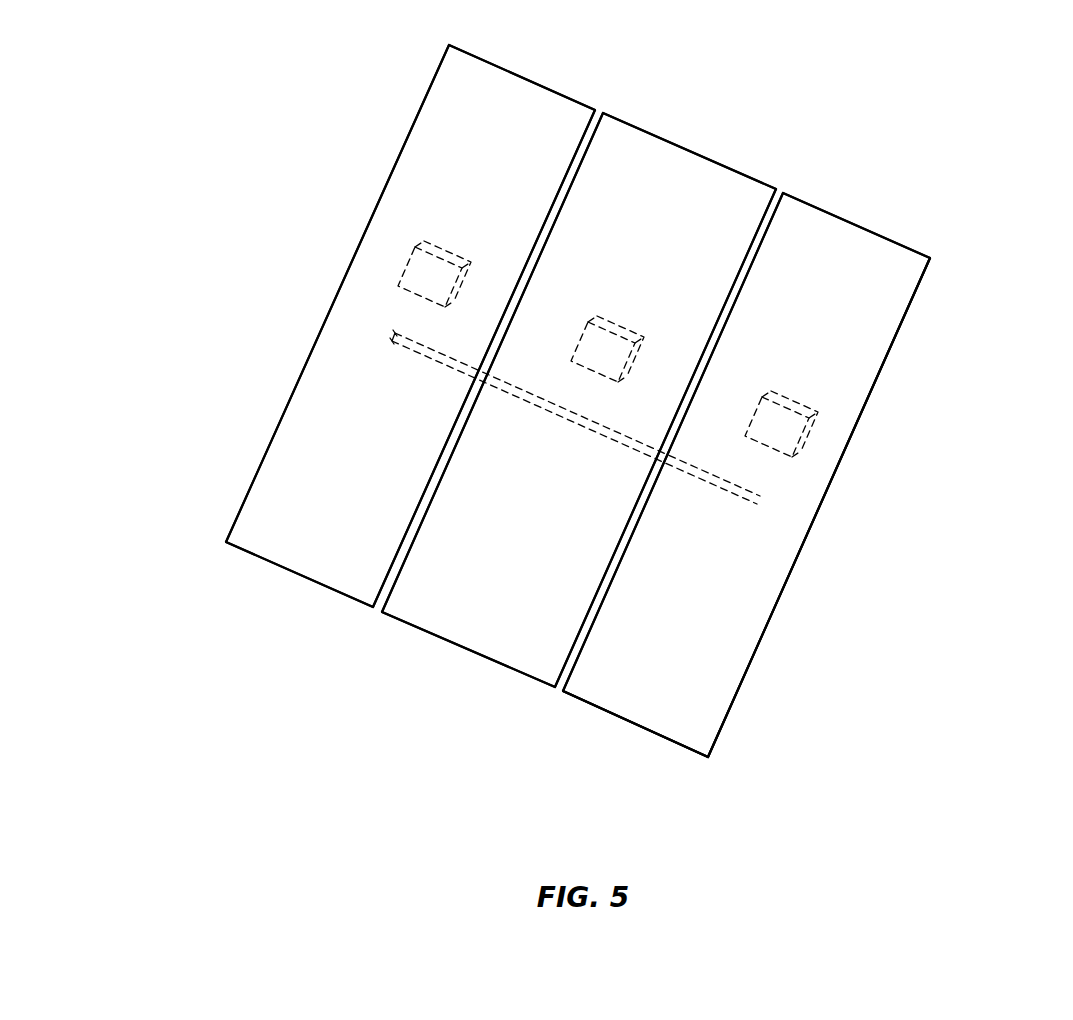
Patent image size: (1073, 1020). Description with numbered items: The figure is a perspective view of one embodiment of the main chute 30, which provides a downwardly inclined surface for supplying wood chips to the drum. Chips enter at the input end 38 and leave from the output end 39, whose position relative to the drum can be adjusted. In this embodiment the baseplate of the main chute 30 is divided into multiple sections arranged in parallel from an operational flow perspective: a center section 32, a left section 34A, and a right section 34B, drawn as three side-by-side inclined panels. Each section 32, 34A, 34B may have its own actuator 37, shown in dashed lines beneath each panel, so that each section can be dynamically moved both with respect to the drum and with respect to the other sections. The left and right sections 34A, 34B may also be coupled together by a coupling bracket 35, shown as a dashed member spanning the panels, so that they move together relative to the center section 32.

The main chute 30 is at (751, 104).
The center section 32 is at (469, 626).
The left section 34A is at (298, 541).
The right section 34B is at (654, 697).
The coupling bracket 35 is at (728, 488).
The actuator 37 is at (412, 243).
The input end 38 is at (927, 307).
The output end 39 is at (731, 744).